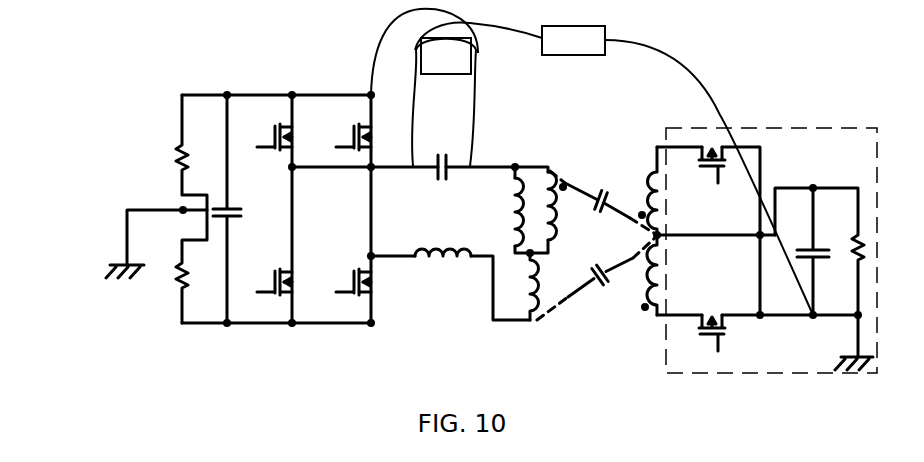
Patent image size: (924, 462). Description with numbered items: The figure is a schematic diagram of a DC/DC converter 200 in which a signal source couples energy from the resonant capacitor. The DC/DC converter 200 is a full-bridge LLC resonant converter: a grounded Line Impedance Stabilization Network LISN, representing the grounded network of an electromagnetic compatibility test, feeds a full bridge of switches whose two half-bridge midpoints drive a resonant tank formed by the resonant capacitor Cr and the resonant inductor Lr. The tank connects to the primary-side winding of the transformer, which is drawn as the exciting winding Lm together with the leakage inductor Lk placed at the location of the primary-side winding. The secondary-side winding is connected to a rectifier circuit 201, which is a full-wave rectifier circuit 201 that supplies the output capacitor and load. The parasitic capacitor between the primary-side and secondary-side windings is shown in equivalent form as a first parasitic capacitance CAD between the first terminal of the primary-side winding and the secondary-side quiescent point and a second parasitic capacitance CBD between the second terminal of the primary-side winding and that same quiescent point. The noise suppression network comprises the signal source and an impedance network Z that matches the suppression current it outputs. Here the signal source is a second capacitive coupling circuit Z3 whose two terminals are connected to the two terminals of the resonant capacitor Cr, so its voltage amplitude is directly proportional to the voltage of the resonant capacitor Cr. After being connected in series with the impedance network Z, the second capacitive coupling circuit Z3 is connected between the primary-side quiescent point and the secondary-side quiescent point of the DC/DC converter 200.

The DC/DC converter 200 is at (58, 50).
The rectifier circuit 201 is at (762, 128).
The Line Impedance Stabilization Network LISN is at (135, 242).
The resonant capacitor Cr is at (445, 148).
The resonant inductor Lr is at (443, 266).
The exciting winding Lm is at (501, 212).
The leakage inductor Lk is at (520, 286).
The first parasitic capacitance CAD is at (603, 198).
The second parasitic capacitance CBD is at (597, 282).
The second capacitive coupling circuit Z3 is at (424, 87).
The impedance network Z is at (614, 168).